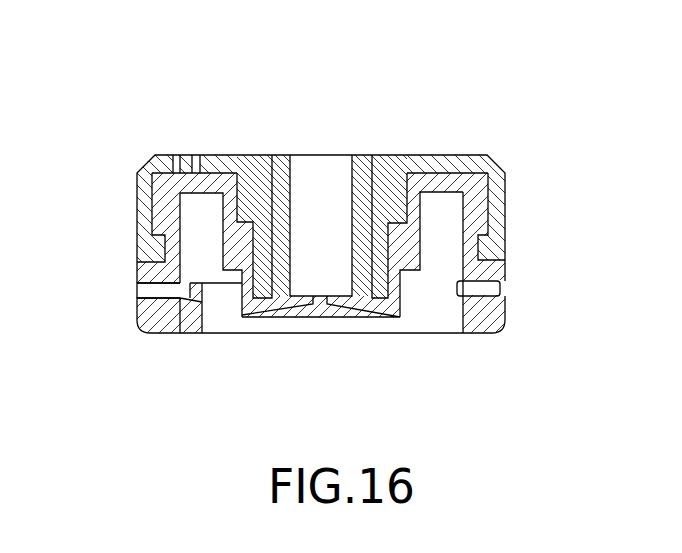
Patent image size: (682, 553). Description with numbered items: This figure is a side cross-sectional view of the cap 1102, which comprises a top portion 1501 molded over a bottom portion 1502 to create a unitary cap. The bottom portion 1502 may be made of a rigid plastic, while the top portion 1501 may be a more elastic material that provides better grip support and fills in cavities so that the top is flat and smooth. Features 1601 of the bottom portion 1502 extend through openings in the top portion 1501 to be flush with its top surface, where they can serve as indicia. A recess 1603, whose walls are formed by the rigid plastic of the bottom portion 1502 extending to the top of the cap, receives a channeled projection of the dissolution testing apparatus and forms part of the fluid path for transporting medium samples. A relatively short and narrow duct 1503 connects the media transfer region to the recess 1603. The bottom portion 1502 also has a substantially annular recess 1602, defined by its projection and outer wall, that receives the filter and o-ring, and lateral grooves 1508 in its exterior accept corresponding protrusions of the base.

The cap 1102 is at (340, 37).
The bottom portion 1502 is at (170, 206).
The features 1601 is at (183, 156).
The top portion 1501 is at (258, 168).
The recess 1603 is at (320, 197).
The duct 1503 is at (325, 302).
The annular recess 1602 is at (433, 303).
The lateral grooves 1508 is at (153, 289).